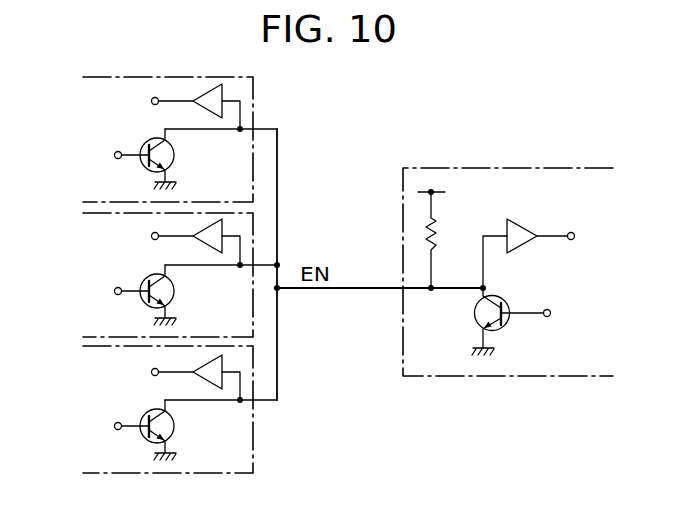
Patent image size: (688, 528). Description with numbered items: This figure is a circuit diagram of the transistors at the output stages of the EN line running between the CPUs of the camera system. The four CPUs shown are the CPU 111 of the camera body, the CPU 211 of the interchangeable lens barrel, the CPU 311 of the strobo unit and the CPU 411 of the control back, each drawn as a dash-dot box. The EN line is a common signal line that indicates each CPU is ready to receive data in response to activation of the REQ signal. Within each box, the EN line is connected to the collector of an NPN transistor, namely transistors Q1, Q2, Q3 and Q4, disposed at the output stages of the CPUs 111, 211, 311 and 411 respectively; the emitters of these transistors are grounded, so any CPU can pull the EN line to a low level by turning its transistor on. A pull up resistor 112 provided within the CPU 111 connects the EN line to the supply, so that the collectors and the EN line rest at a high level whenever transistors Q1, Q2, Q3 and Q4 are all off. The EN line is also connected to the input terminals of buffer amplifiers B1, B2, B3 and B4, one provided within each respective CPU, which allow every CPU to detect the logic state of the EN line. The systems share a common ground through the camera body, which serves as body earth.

The CPU of camera body 111 is at (511, 163).
The pull up resistor 112 is at (438, 228).
The CPU of interchangeable lens barrel 211 is at (150, 74).
The CPU of strobo unit 311 is at (259, 245).
The CPU of control back 411 is at (263, 429).
The buffer amplifier B1 is at (514, 228).
The buffer amplifier B2 is at (203, 104).
The buffer amplifier B3 is at (203, 239).
The buffer amplifier B4 is at (203, 375).
The NPN transistor Q1 is at (502, 328).
The NPN transistor Q2 is at (174, 160).
The NPN transistor Q3 is at (174, 297).
The NPN transistor Q4 is at (174, 432).